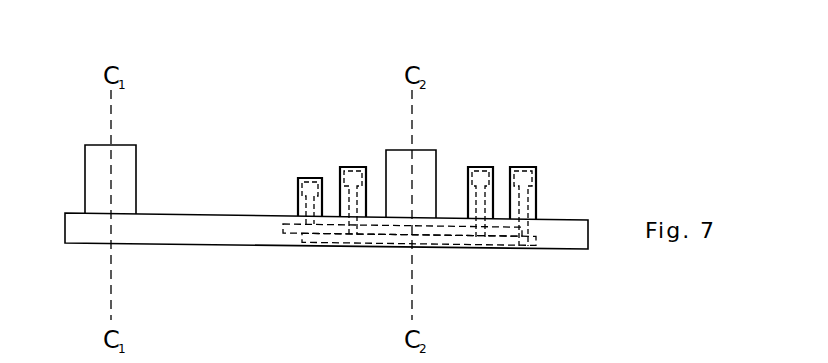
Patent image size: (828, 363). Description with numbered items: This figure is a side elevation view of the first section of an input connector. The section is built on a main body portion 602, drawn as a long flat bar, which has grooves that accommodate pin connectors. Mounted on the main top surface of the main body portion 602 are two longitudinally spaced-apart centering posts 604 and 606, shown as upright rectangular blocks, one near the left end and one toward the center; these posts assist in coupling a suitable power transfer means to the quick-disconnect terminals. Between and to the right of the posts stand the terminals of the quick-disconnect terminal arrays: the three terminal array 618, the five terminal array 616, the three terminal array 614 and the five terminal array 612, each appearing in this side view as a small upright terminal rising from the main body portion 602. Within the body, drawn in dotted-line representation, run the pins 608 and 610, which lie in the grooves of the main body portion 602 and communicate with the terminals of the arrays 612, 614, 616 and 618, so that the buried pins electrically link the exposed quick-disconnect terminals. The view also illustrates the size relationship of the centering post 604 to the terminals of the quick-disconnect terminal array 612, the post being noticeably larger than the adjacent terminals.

The main body portion 602 is at (172, 243).
The centering post 604 is at (436, 152).
The centering post 606 is at (136, 167).
The pin 608 is at (503, 243).
The pin 610 is at (283, 233).
The five terminal array 612 is at (537, 190).
The three terminal array 614 is at (469, 170).
The five terminal array 616 is at (340, 168).
The three terminal array 618 is at (298, 192).